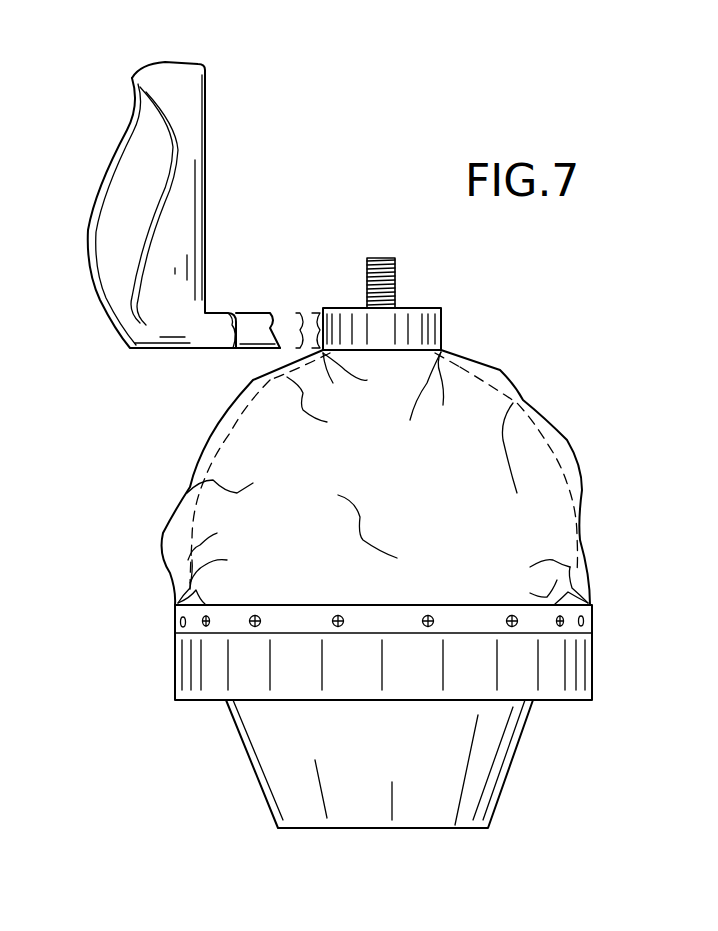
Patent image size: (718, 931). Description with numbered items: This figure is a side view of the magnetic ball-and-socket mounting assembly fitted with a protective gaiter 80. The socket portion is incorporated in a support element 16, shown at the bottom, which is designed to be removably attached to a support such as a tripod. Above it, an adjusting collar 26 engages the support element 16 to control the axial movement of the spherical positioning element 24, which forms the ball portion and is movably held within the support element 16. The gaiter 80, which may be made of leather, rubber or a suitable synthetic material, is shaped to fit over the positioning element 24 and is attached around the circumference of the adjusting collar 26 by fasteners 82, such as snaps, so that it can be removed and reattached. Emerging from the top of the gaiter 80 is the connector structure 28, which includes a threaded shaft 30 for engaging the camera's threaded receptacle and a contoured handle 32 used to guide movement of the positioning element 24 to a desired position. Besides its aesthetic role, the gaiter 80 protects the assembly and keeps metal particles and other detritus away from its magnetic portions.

The support element 16 is at (247, 793).
The positioning element 24 is at (557, 437).
The adjusting collar 26 is at (596, 665).
The connector structure 28 is at (326, 304).
The threaded shaft 30 is at (395, 296).
The handle 32 is at (132, 128).
The gaiter 80 is at (507, 378).
The fasteners 82 is at (206, 621).